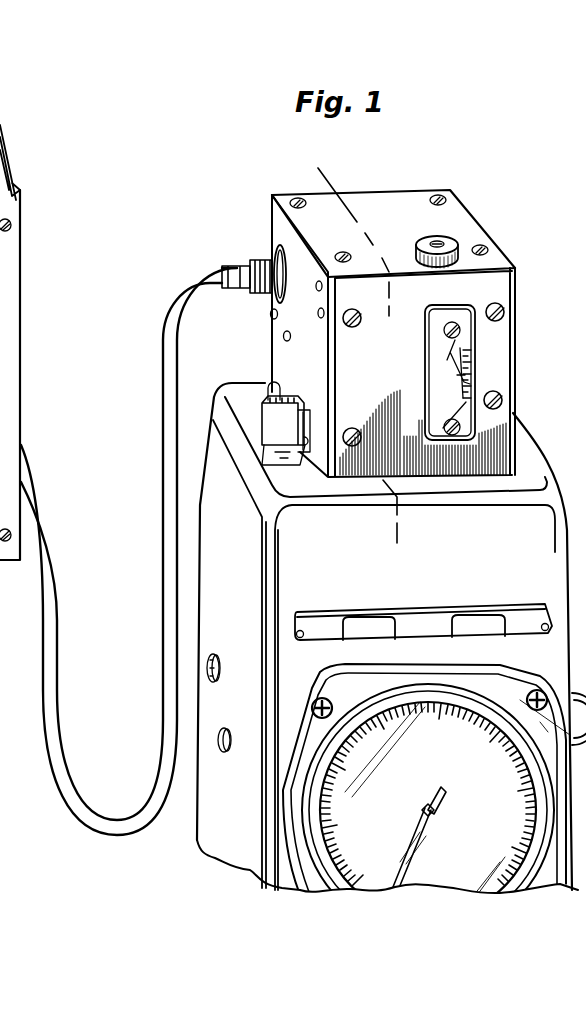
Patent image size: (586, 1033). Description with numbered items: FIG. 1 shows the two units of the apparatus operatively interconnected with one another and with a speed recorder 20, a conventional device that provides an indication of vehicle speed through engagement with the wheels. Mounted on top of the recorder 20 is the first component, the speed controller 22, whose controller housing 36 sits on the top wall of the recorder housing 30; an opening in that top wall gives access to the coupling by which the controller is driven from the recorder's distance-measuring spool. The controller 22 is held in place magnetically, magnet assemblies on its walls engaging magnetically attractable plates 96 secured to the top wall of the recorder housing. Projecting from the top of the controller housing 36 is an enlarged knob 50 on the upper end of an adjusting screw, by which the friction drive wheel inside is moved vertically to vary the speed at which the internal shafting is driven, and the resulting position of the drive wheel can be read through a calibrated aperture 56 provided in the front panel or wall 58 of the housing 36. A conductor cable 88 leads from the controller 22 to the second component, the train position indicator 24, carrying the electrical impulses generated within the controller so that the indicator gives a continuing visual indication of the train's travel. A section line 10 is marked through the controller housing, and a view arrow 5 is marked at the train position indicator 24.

The view direction of FIG. 5 is at (0, 143).
The section line 10- 10 is at (307, 172).
The speed recorder 20 is at (200, 640).
The speed controller 22 is at (414, 314).
The train position indicator 24 is at (30, 282).
The recorder housing 30 is at (531, 468).
The controller housing 36 is at (519, 291).
The knob 50 is at (418, 241).
The calibrated aperture 56 is at (466, 326).
The front panel or wall 58 is at (480, 377).
The conductor cable 88 is at (62, 768).
The magnetically attractable plates 96 is at (300, 462).